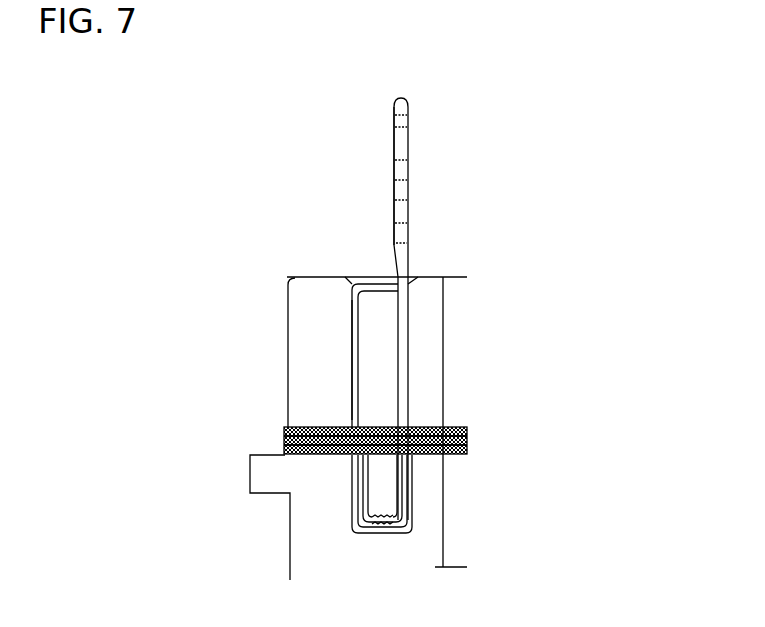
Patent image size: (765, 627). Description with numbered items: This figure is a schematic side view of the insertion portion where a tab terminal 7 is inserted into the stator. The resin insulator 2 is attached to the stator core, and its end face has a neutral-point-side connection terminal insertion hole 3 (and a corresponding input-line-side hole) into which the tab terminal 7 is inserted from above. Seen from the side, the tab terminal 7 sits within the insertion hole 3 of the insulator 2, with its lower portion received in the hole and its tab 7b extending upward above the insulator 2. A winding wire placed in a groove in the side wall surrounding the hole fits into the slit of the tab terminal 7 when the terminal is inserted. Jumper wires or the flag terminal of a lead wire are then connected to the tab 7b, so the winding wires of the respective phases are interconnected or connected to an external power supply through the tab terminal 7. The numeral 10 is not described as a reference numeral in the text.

The insulator 2 is at (433, 350).
The neutral-point-side connection terminal insertion hole 3 is at (354, 283).
The tab terminal 7 is at (360, 128).
The tab 7b is at (408, 200).
The first layer 10 is at (453, 427).